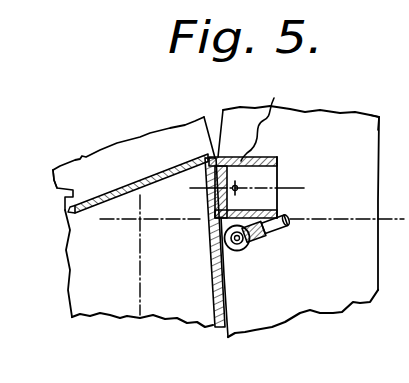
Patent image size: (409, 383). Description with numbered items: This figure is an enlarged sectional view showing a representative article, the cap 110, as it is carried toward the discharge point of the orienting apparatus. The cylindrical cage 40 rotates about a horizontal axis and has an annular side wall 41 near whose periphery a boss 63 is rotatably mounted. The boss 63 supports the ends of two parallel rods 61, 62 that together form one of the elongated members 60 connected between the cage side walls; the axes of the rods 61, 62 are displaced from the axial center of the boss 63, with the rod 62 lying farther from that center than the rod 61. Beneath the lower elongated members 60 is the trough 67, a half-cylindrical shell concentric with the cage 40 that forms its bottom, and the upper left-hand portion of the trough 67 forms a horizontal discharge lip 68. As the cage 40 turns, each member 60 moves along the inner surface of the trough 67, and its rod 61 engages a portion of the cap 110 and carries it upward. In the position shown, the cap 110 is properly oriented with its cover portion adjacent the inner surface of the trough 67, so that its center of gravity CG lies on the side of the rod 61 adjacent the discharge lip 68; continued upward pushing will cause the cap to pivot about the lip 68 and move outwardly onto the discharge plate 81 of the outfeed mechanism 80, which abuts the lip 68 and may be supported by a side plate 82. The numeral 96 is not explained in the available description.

The cylindrical cage 40 is at (338, 318).
The annular side wall 41 is at (377, 117).
The cap 110 is at (260, 121).
The outfeed mechanism 80 is at (150, 132).
The arm section 96 is at (118, 166).
The discharge plate 81 is at (57, 190).
The side plate 82 is at (177, 321).
The discharge lip 68 is at (191, 190).
The trough 67 is at (208, 280).
The elongated member 60 is at (278, 248).
The rod 61 is at (260, 241).
The rod 62 is at (289, 229).
The boss 63 is at (241, 252).
The center of gravity CG is at (238, 188).